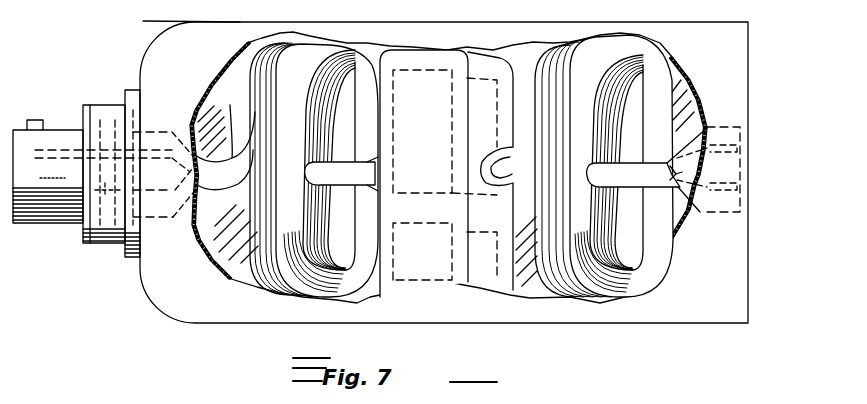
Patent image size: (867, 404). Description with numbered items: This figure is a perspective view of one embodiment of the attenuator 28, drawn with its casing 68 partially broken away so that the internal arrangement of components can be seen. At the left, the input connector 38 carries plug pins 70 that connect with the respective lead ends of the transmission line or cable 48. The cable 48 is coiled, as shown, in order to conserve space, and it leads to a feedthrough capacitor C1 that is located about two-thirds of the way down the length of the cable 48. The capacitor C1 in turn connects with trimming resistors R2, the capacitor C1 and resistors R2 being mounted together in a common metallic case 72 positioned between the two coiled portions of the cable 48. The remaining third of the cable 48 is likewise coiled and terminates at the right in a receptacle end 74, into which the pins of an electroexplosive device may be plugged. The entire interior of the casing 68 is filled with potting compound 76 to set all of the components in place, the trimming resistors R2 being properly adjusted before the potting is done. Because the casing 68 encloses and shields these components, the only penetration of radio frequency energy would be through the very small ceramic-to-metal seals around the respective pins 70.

The attenuator 28 is at (722, 16).
The casing 68 is at (171, 29).
The input connector 38 is at (60, 128).
The plug pins 70 is at (36, 150).
The potting compound 76 is at (226, 250).
The transmission line or cable 48 is at (257, 73).
The common metallic case 72 is at (405, 48).
The feedthrough capacitor C1 is at (437, 70).
The trimming resistors R2 is at (405, 282).
The receptacle end 74 is at (742, 164).